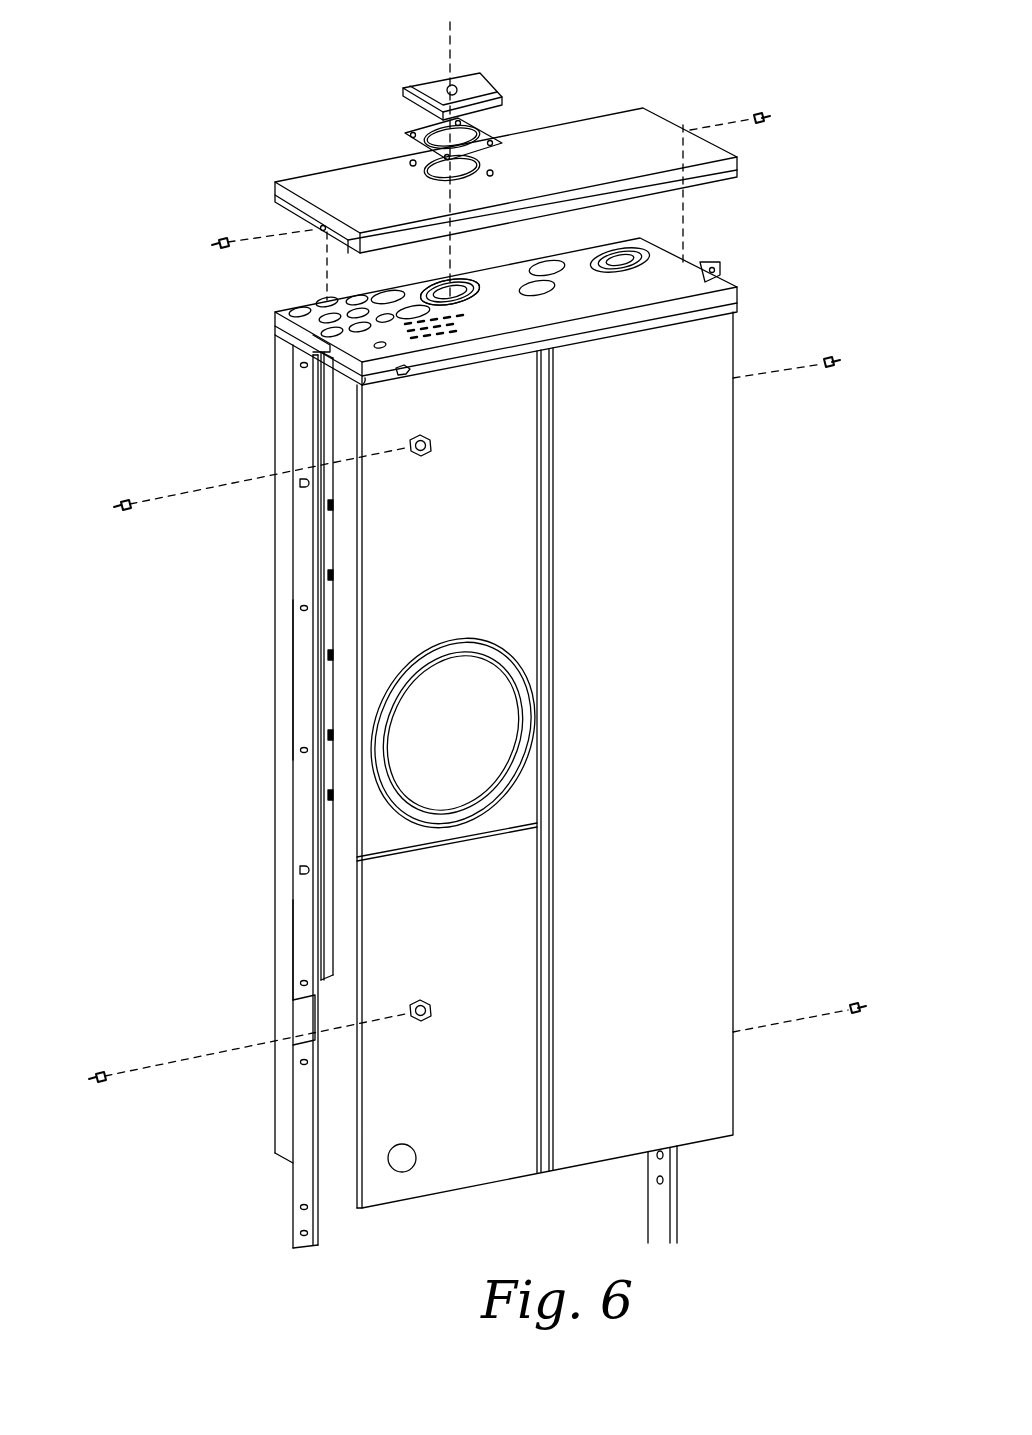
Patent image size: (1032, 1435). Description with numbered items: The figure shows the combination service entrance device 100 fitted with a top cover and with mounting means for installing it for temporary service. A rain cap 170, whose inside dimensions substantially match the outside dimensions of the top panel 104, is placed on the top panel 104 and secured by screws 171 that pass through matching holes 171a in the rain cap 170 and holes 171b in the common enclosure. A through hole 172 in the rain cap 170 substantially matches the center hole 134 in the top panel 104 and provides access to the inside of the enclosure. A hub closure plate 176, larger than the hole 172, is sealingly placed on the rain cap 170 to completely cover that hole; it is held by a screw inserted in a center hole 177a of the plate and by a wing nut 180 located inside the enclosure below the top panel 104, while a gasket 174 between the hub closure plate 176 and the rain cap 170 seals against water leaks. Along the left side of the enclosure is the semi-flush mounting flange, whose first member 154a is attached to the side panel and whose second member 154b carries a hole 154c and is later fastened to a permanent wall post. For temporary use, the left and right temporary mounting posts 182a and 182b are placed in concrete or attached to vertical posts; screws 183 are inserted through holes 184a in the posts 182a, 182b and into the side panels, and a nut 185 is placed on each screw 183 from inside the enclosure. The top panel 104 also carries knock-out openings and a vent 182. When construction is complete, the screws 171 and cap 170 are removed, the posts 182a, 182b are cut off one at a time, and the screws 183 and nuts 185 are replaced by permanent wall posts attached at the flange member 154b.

The combination service entrance device 100 is at (570, 692).
The top panel 104 is at (601, 300).
The center hole 134 is at (460, 290).
The flange member 154a is at (330, 496).
The second flange member 154b is at (300, 950).
The hole on the mounting flange 154c is at (300, 750).
The rain cap 170 is at (620, 128).
The screws 171 is at (768, 114).
The holes in the rain cap 171a is at (322, 230).
The holes in the common enclosure 171b is at (698, 262).
The through hole 172 is at (450, 178).
The gasket 174 is at (420, 137).
The hub closure plate 176 is at (451, 72).
The center hole 177a is at (456, 88).
The wing nut 180 is at (406, 372).
The vent 182 is at (460, 328).
The left temporary mounting post 182a is at (292, 1195).
The right temporary mounting post 182b is at (680, 1165).
The screws 183 is at (836, 356).
The mounting holes 184a is at (320, 343).
The nut 185 is at (432, 452).